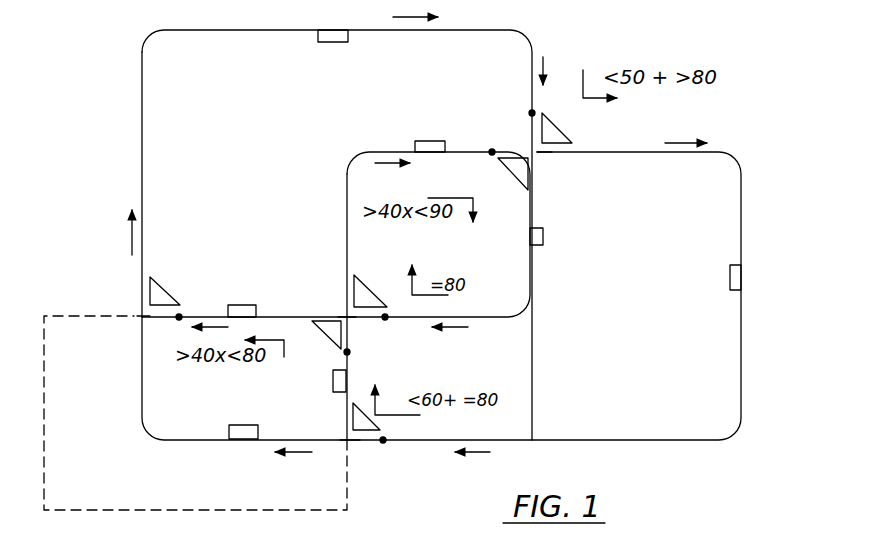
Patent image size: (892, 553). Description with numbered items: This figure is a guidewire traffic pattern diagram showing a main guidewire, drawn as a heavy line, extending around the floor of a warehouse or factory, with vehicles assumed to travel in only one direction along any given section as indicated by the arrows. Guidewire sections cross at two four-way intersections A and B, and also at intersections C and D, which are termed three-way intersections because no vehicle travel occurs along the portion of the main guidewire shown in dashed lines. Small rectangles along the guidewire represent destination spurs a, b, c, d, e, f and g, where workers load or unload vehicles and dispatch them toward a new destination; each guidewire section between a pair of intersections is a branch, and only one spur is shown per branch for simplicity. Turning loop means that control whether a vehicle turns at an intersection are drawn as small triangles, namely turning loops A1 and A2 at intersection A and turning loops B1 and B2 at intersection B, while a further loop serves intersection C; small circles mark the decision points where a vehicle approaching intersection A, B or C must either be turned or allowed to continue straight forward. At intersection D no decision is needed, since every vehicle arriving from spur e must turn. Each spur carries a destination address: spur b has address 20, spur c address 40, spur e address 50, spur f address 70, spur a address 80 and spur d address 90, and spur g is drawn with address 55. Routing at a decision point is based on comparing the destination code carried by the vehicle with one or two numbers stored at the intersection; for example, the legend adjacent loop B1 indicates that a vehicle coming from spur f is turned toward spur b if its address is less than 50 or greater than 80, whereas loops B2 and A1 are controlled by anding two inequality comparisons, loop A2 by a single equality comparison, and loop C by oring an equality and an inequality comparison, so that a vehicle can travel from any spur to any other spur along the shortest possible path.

The destination address of spur f 70 is at (333, 35).
The destination address of spur a 80 is at (430, 148).
The temperature value at heat exchanger g 55 is at (527, 239).
The destination address of spur b 20 is at (729, 277).
The destination address of spur e 50 is at (242, 291).
The destination address of spur c 40 is at (351, 368).
The destination address of spur d 90 is at (243, 434).
The spur f is at (333, 46).
The spur a is at (430, 138).
The spur g is at (545, 239).
The spur b is at (744, 277).
The spur e is at (242, 302).
The spur c is at (331, 381).
The spur d is at (243, 420).
The four-way intersection A is at (344, 316).
The turning loop A1 is at (335, 340).
The turning loop A2 is at (372, 296).
The four-way intersection B is at (537, 157).
The turning loop B1 is at (562, 128).
The turning loop B2 is at (508, 178).
The three-way intersection C is at (352, 443).
The three-way intersection D is at (140, 318).